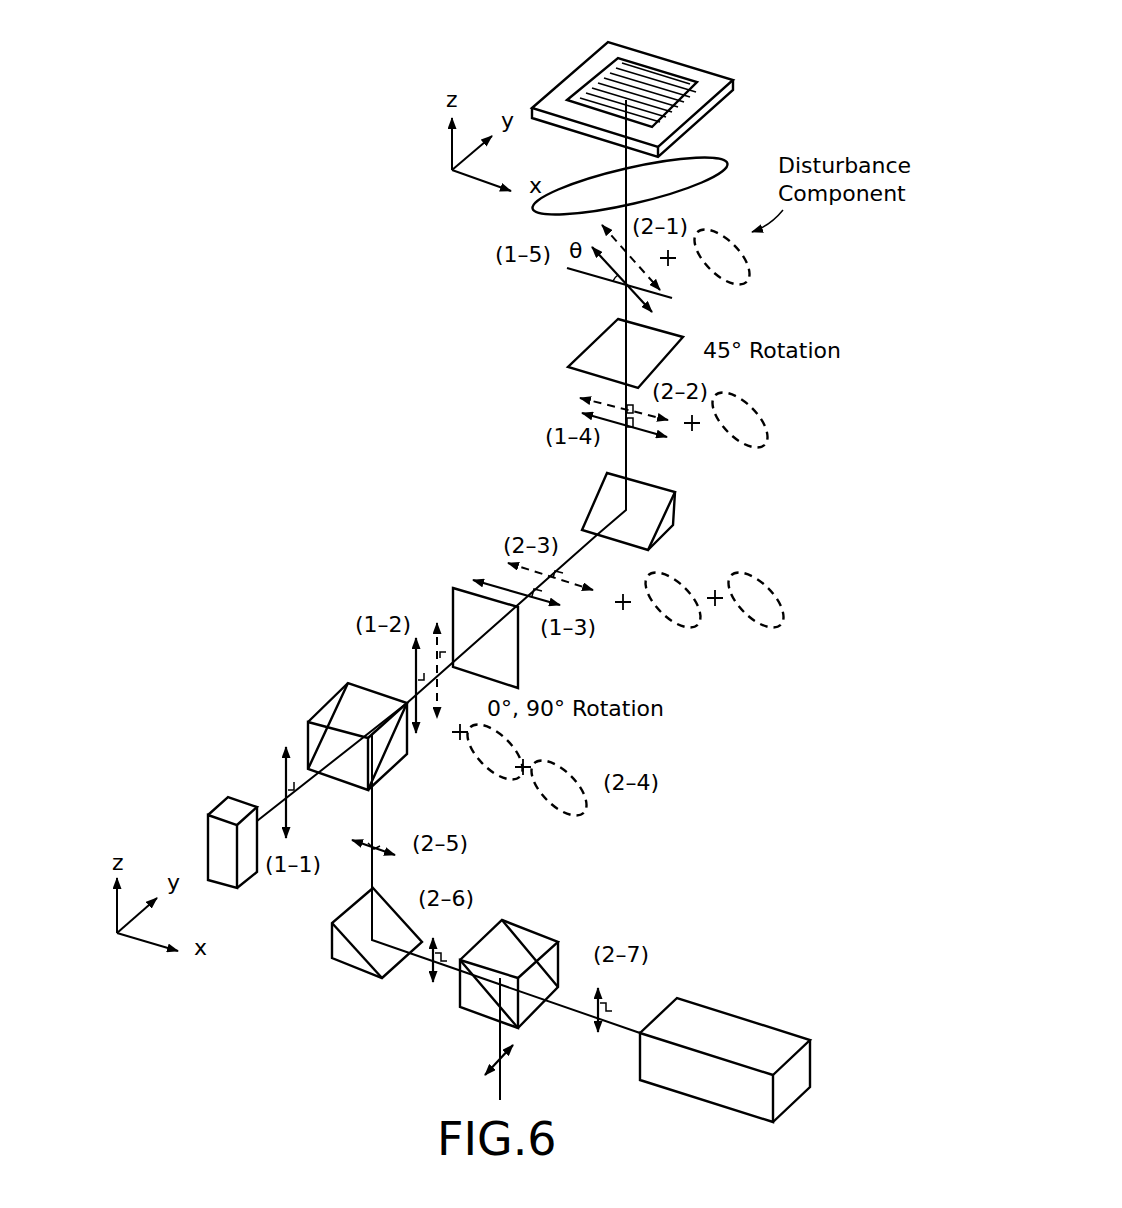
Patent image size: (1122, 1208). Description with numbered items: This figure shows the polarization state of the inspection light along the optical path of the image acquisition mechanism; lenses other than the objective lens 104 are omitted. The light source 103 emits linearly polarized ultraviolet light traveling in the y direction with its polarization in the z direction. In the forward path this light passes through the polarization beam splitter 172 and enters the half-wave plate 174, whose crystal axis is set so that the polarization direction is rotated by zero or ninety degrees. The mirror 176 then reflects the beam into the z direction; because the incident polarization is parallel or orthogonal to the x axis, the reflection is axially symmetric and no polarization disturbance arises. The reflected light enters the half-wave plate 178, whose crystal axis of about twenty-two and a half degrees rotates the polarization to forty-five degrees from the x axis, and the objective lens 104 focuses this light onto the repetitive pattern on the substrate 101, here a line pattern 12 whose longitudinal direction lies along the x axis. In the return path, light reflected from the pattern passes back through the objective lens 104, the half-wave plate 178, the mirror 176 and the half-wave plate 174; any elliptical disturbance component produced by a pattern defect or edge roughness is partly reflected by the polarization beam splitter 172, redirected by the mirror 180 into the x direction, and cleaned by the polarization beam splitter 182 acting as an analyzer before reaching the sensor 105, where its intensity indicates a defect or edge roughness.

The line pattern 12 is at (654, 70).
The substrate 101 is at (717, 72).
The objective lens 104 is at (720, 158).
The half-wave plate 178 is at (678, 337).
The mirror 176 is at (677, 510).
The half-wave plate 174 is at (460, 587).
The polarization beam splitter 172 is at (320, 714).
The light source 103 is at (216, 812).
The mirror 180 is at (340, 962).
The polarization beam splitter 182 is at (543, 933).
The sensor 105 is at (745, 1016).